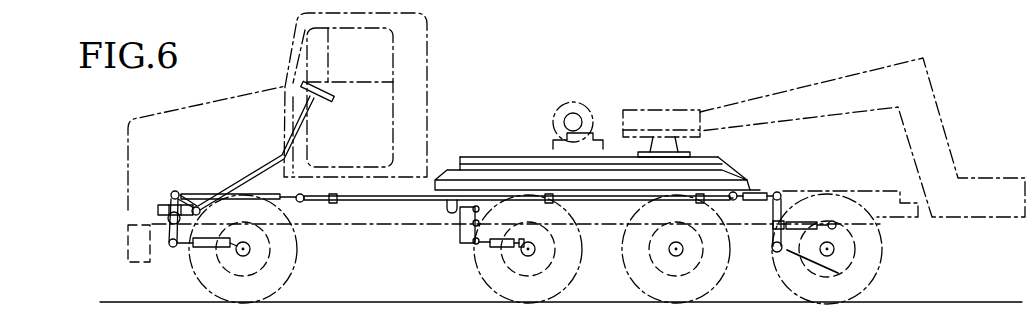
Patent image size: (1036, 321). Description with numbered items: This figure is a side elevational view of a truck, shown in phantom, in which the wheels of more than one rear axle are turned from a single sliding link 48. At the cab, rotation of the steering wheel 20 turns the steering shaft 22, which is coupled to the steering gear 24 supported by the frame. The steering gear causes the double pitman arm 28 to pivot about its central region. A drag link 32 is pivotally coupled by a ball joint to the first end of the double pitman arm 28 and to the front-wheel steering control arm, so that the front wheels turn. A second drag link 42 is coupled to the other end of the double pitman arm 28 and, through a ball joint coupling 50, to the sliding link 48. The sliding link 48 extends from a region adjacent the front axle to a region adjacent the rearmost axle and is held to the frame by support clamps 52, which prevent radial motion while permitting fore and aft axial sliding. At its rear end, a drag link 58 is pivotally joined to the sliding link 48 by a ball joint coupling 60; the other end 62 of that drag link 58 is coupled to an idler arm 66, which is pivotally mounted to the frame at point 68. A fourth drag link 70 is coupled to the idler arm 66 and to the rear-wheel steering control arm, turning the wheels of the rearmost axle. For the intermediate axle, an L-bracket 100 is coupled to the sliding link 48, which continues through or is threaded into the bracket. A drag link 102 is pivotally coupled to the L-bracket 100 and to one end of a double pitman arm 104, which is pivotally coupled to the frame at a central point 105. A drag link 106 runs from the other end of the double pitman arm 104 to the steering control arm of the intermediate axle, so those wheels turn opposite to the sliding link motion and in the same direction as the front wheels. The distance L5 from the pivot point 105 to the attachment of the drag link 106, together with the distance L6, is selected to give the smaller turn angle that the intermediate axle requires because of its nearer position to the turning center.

The steering wheel 20 is at (335, 97).
The steering shaft 22 is at (256, 167).
The steering gear 24 is at (156, 208).
The double pitman arm 28 is at (171, 192).
The drag link 32 is at (212, 250).
The drag link 42 is at (213, 193).
The sliding link 48 is at (456, 192).
The ball joint coupling 50 is at (302, 195).
The support clamp 52 is at (336, 194).
The drag link 58 is at (753, 192).
The ball joint coupling 60 is at (746, 189).
The other end of the drag link 62 is at (786, 193).
The idler arm 66 is at (839, 274).
The pivot point 68 is at (781, 253).
The fourth drag link 70 is at (822, 224).
The L-bracket 100 is at (447, 200).
The drag link 102 is at (479, 207).
The double pitman arm 104 is at (479, 216).
The pivot point 105 is at (506, 240).
The drag link 106 is at (503, 250).
The distance L5 is at (460, 238).
The distance L6 is at (458, 222).